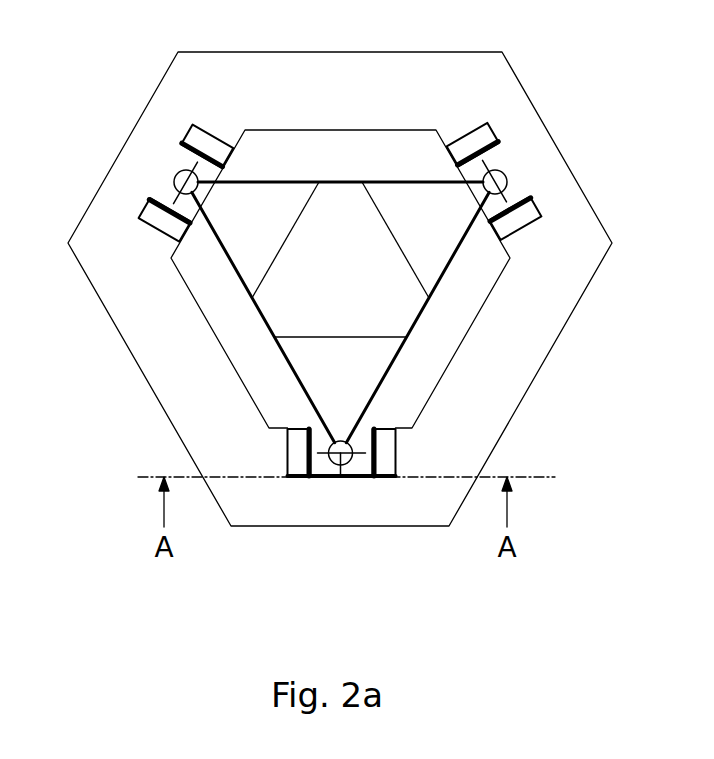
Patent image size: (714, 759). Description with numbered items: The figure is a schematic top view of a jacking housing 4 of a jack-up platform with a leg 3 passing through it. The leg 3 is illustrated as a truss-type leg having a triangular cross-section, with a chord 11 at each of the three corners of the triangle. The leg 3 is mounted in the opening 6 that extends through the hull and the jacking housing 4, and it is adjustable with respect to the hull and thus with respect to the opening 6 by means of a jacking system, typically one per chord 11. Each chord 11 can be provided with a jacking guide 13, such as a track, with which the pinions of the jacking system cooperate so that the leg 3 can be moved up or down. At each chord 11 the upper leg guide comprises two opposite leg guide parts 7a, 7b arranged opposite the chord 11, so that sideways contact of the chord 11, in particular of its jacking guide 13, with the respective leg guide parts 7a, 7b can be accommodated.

The leg 3 is at (400, 315).
The jacking housing 4 is at (495, 411).
The opening 6 is at (344, 155).
The leg guide part 7a is at (165, 203).
The leg guide part 7b is at (173, 161).
The chord 11 is at (175, 177).
The jacking guide 13 is at (358, 456).